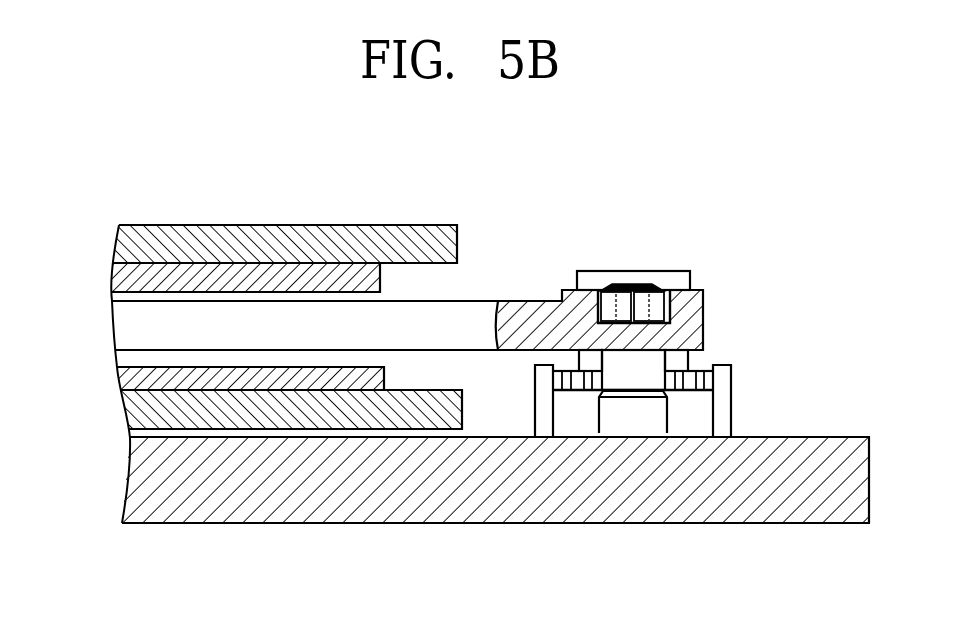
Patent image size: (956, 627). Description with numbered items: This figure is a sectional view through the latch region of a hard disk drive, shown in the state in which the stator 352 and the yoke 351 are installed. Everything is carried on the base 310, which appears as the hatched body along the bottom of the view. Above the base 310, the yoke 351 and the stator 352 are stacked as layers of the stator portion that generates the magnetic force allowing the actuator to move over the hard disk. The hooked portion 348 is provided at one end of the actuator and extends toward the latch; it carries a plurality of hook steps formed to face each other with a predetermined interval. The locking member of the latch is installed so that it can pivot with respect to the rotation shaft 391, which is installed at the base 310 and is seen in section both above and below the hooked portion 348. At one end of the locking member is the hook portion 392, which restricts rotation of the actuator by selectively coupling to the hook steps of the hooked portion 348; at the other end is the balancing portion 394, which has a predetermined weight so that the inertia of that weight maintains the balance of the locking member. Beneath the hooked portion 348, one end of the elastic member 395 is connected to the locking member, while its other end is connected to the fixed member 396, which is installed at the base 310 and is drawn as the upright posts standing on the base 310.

The base 310 is at (500, 522).
The hooked portion 348 is at (529, 298).
The yoke 351 is at (121, 234).
The stator 352 is at (117, 365).
The rotation shaft 391 is at (632, 286).
The hook portion 392 is at (668, 290).
The balancing portion 394 is at (594, 280).
The elastic member 395 is at (692, 373).
The fixed member 396 is at (731, 407).